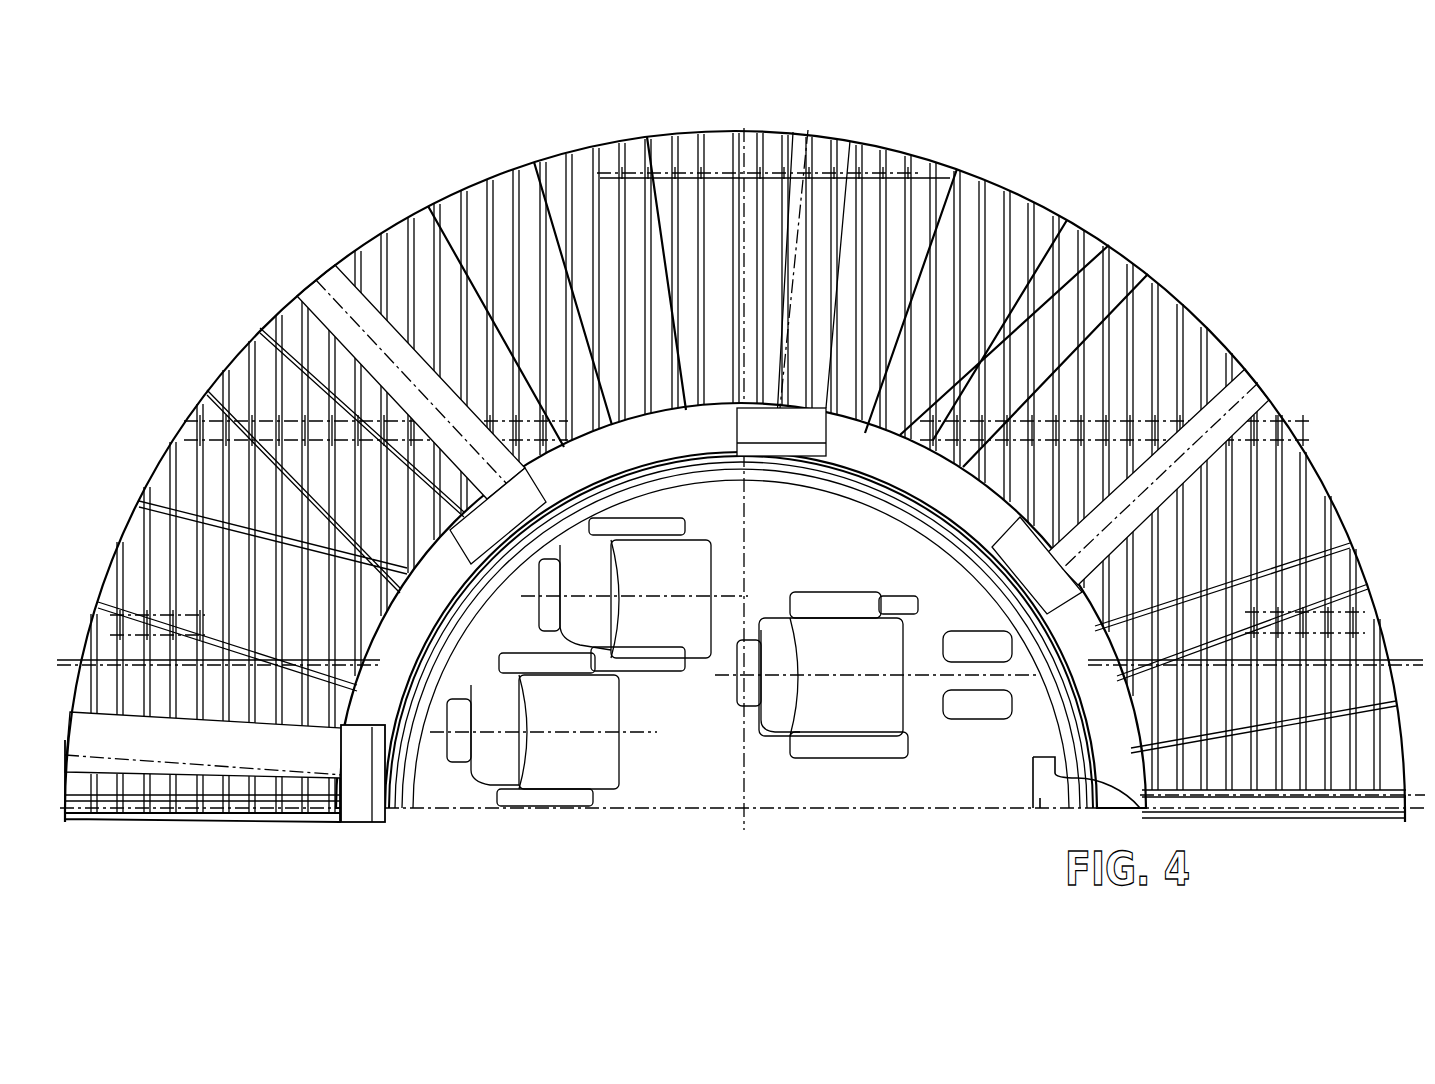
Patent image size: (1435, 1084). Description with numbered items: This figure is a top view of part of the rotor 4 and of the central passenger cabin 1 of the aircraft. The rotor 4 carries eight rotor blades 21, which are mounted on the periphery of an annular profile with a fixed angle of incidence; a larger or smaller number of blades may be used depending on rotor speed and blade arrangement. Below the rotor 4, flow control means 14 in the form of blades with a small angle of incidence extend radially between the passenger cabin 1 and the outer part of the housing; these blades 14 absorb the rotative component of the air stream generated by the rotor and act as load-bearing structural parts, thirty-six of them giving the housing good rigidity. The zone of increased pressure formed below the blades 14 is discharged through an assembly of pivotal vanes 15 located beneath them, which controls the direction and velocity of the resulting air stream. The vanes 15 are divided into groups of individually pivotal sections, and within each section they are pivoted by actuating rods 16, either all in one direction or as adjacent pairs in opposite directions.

The passenger cabin 1 is at (678, 778).
The rotor 4 is at (1280, 400).
The flow control means (blades) 14 is at (557, 227).
The pivotal vanes 15 is at (330, 403).
The actuating rods 16 is at (690, 175).
The rotor blades 21 is at (338, 300).